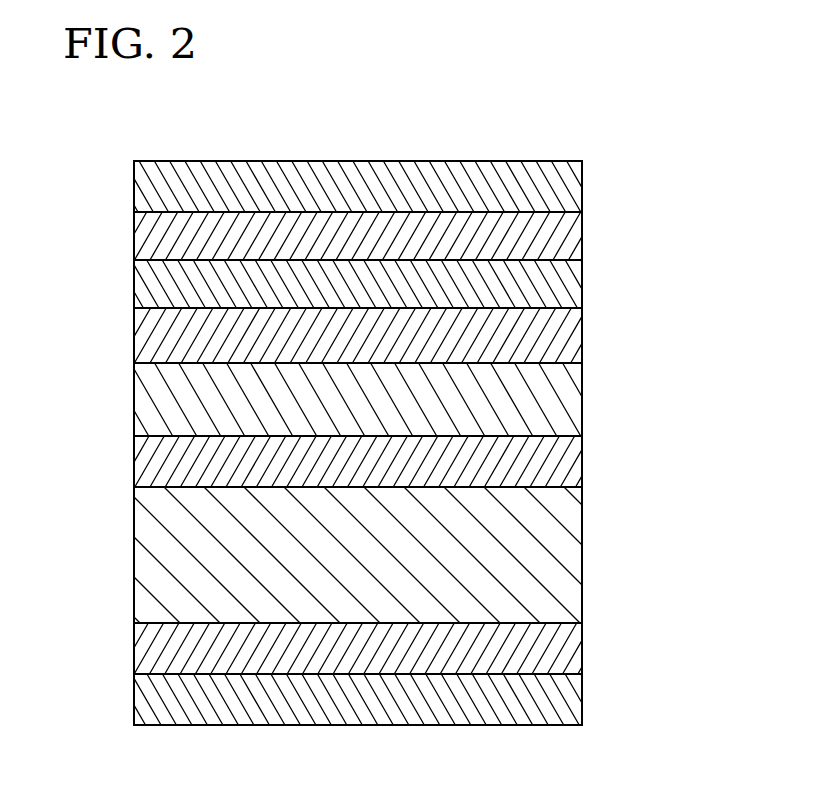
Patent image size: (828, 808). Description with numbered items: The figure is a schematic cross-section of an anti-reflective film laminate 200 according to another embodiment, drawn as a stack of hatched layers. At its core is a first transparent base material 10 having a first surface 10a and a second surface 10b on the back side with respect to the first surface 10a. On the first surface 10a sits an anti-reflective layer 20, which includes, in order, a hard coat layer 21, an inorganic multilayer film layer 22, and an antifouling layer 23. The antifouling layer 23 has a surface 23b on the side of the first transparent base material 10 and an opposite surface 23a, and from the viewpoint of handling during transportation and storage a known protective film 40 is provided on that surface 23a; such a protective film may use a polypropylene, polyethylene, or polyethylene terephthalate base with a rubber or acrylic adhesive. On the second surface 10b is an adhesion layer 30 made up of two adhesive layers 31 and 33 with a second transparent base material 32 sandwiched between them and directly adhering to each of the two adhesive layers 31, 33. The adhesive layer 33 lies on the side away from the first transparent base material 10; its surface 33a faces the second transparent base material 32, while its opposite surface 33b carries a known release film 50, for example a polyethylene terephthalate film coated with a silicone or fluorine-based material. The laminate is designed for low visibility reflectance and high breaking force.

The anti-reflective film laminate 200 is at (655, 102).
The protective film 40 is at (557, 188).
The anti-reflective layer 20 is at (639, 217).
The antifouling layer 23 is at (557, 231).
The surface of the antifouling layer 23a is at (192, 211).
The surface of the antifouling layer 23b is at (184, 261).
The inorganic multilayer film layer 22 is at (557, 279).
The hard coat layer 21 is at (557, 334).
The first transparent base material 10 is at (557, 396).
The first surface 10a is at (192, 362).
The second surface 10b is at (185, 437).
The adhesion layer 30 is at (639, 445).
The adhesive layer 31 is at (557, 458).
The second transparent base material 32 is at (557, 549).
The adhesive layer 33 is at (557, 647).
The surface of the adhesive layer 33a is at (192, 622).
The surface of the adhesive layer 33b is at (185, 675).
The release film 50 is at (557, 695).